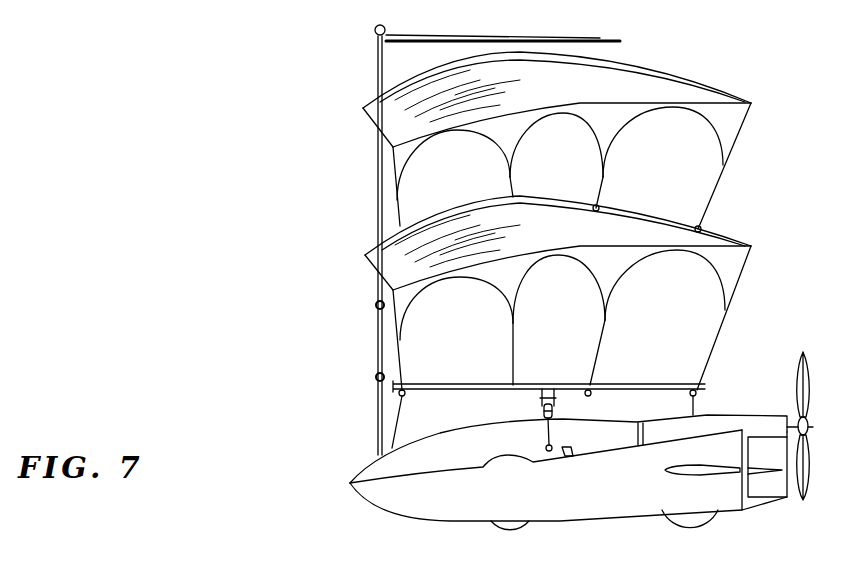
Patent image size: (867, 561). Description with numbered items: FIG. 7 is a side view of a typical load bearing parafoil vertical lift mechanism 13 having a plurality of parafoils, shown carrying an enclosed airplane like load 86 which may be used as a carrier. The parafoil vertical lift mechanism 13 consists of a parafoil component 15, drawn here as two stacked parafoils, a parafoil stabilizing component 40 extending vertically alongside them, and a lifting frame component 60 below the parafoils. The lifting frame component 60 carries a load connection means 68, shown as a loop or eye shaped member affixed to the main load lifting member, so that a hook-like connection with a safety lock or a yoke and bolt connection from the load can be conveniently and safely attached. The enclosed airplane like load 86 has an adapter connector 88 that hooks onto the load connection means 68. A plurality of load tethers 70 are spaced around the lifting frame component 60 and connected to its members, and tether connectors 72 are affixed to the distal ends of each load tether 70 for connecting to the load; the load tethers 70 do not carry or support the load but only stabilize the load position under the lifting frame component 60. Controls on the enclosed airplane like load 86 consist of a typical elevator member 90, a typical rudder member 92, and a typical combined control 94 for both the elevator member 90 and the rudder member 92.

The parafoil vertical lift mechanism 13 is at (307, 236).
The parafoil component 15 is at (724, 238).
The parafoil stabilizing component 40 is at (378, 392).
The lifting frame component 60 is at (705, 387).
The load connection means 68 is at (540, 400).
The load tethers 70 is at (401, 418).
The load tether connection means 72 is at (391, 449).
The enclosed airplane like load 86 is at (365, 502).
The adapter connector 88 is at (541, 418).
The elevator member 90 is at (762, 472).
The rudder member 92 is at (777, 500).
The combined control 94 is at (574, 449).